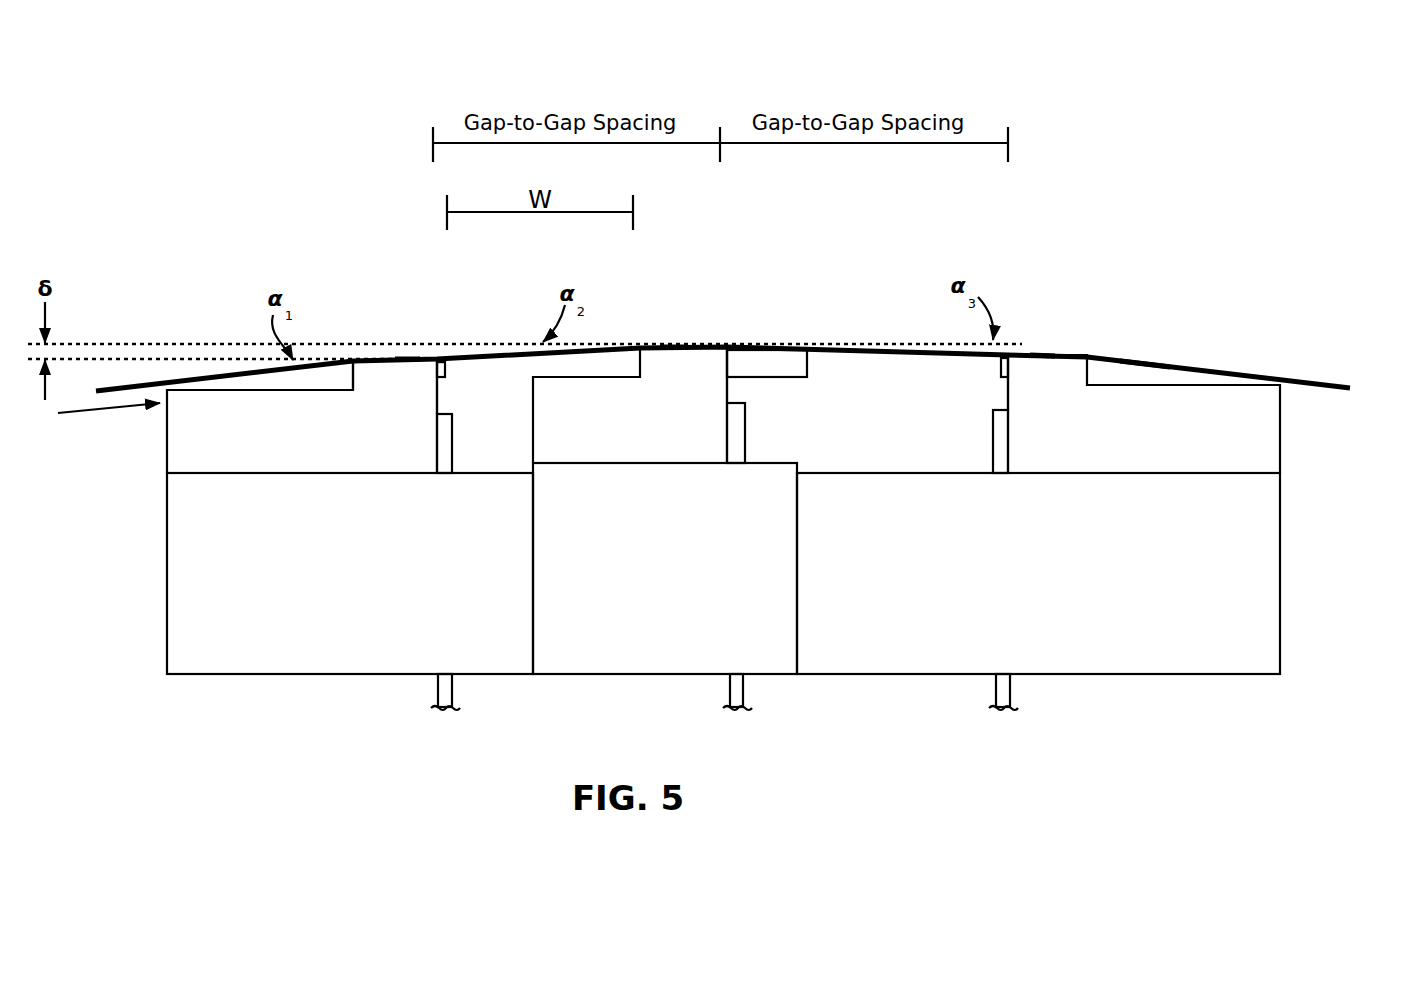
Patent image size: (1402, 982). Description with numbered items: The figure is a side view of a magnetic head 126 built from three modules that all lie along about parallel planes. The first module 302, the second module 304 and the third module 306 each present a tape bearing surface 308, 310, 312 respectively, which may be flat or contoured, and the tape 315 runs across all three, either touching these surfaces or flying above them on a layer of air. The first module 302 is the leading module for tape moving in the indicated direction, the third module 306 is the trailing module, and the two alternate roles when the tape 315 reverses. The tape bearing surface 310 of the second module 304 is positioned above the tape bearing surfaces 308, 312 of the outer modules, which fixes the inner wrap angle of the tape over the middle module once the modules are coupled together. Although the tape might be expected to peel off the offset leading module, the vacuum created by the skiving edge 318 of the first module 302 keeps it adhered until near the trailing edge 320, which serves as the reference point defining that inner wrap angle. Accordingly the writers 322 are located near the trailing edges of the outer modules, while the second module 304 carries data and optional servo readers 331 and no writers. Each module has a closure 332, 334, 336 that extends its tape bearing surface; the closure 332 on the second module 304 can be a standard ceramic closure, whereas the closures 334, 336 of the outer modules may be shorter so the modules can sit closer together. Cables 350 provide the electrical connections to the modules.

The magnetic head 126 is at (340, 227).
The first module 302 is at (167, 442).
The second module 304 is at (612, 377).
The third module 306 is at (1280, 435).
The tape bearing surface 308 is at (407, 357).
The tape bearing surface 310 is at (670, 343).
The tape bearing surface 312 is at (1040, 352).
The tape 315 is at (1143, 360).
The skiving edge 318 is at (347, 370).
The trailing edge 320 is at (447, 363).
The writers 322 is at (435, 357).
The data and optional servo readers 331 is at (727, 343).
The closure 332 is at (778, 377).
The closure 334 is at (447, 368).
The closure 336 is at (1002, 367).
The cables 350 is at (452, 690).